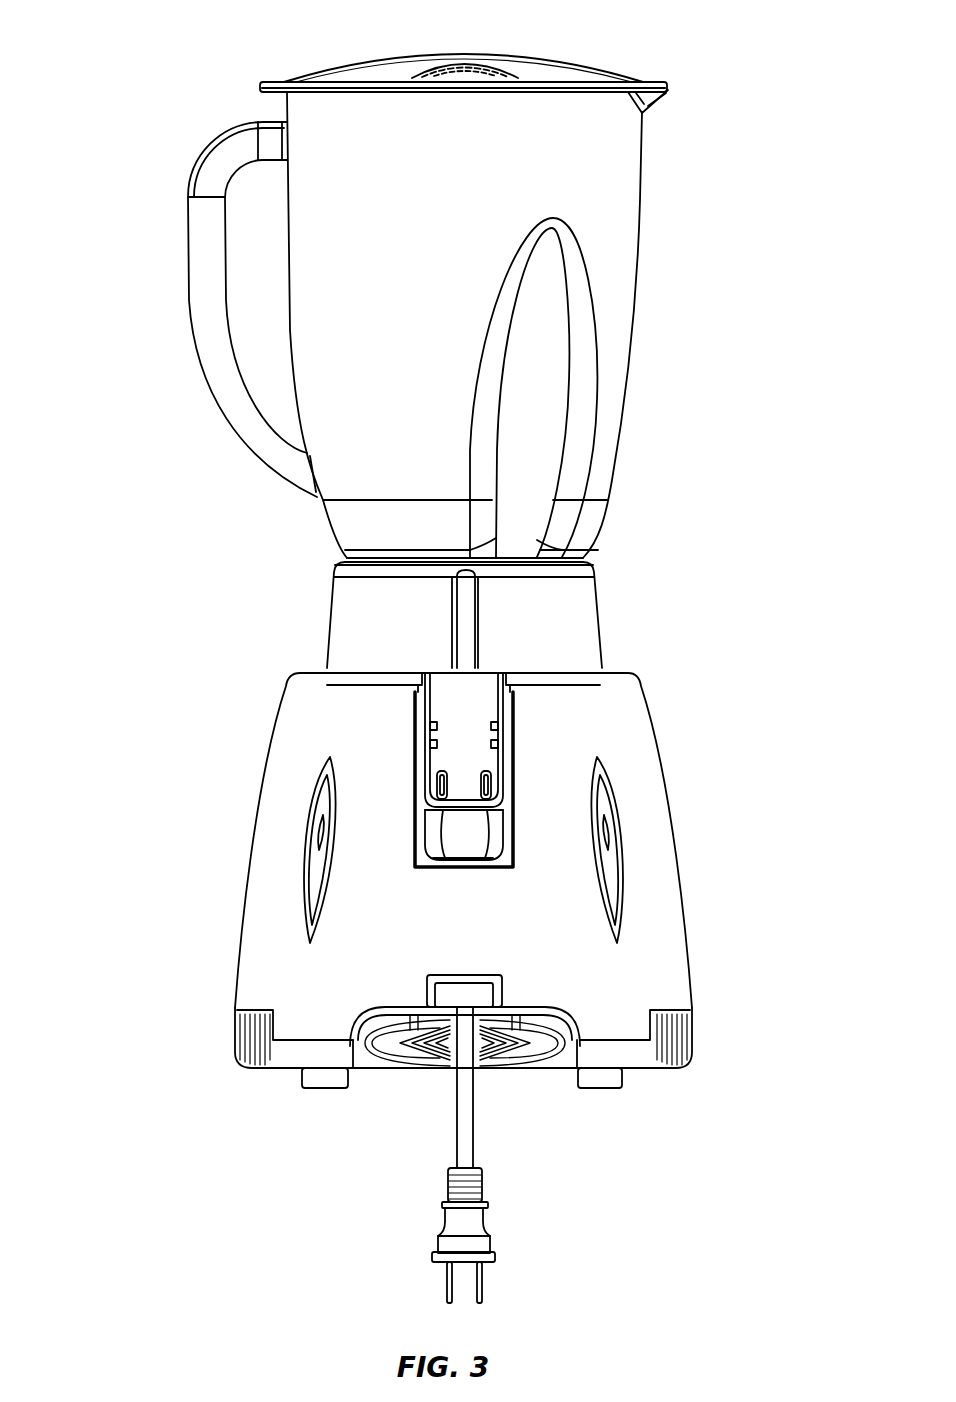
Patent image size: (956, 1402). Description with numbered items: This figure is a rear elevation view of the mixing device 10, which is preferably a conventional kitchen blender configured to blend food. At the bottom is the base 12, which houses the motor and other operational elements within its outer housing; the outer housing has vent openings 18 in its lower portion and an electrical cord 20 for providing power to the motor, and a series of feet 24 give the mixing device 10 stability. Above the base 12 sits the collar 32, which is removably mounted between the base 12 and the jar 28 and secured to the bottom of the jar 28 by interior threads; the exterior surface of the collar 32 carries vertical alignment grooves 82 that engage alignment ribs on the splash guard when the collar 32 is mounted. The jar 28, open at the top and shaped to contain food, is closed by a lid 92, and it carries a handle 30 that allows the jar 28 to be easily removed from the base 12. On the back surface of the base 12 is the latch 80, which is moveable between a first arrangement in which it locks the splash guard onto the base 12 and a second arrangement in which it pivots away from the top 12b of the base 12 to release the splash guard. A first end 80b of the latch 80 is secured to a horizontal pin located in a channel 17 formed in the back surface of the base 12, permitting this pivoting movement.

The mixing device 10 is at (203, 53).
The lid 92 is at (597, 73).
The handle 30 is at (205, 312).
The jar 28 is at (355, 488).
The collar 32 is at (465, 615).
The vertical alignment grooves 82 is at (462, 633).
The base 12 is at (457, 905).
The top of the base 12b is at (410, 910).
The latch 80 is at (350, 770).
The first end of the latch 80b is at (465, 783).
The channel 17 is at (493, 837).
The vent openings 18 is at (687, 1040).
The feet 24 is at (330, 1090).
The electrical cord 20 is at (438, 1243).